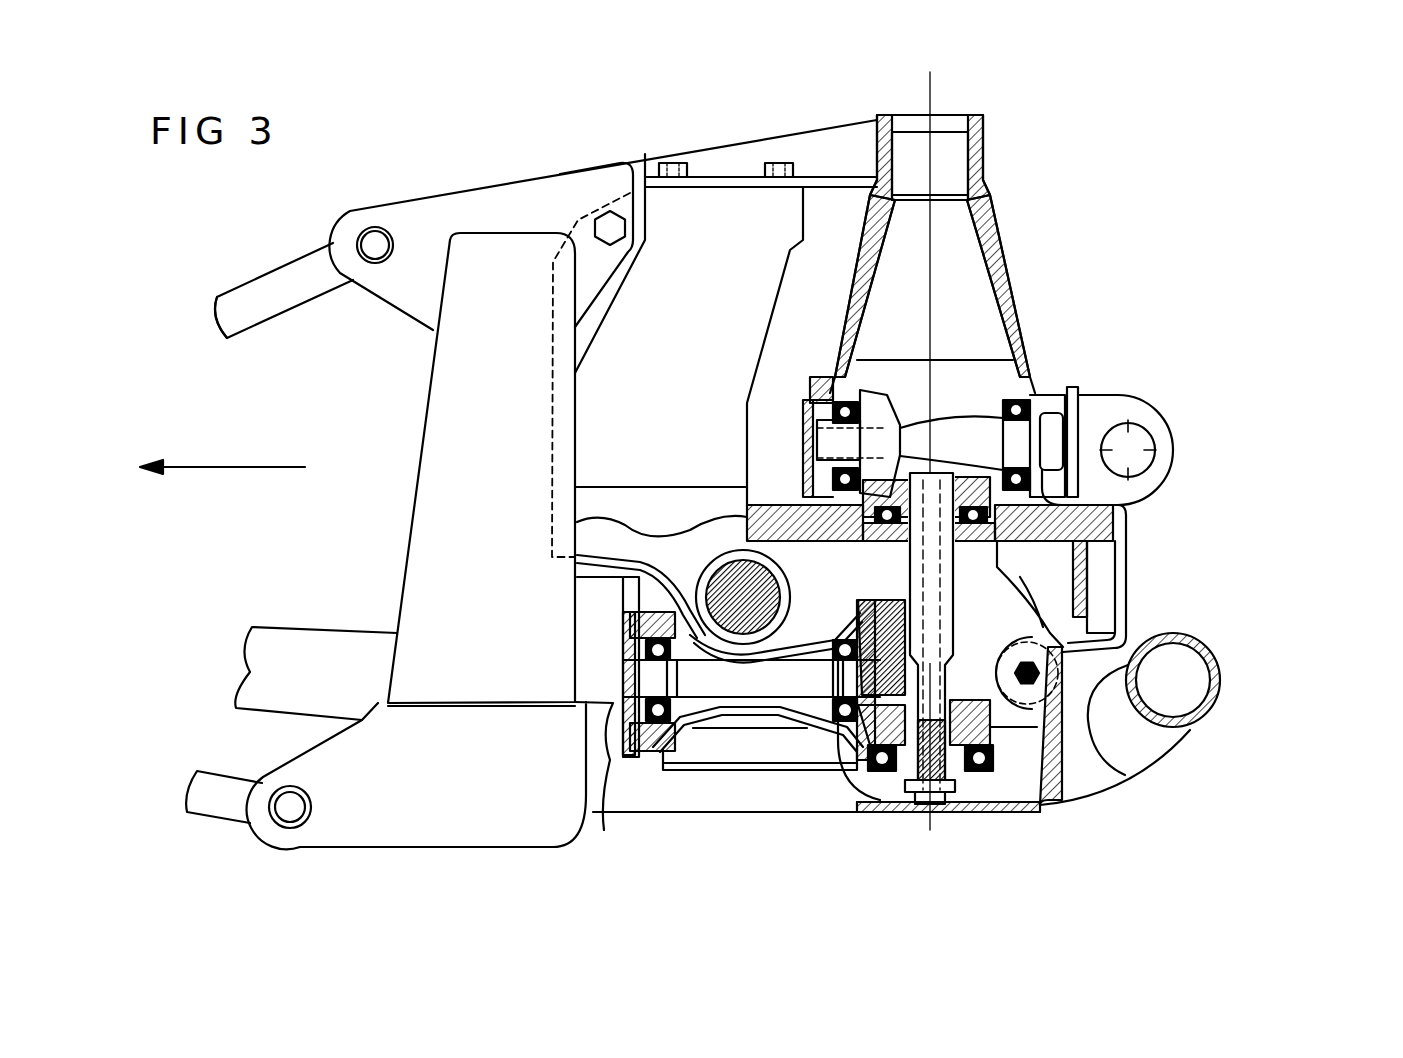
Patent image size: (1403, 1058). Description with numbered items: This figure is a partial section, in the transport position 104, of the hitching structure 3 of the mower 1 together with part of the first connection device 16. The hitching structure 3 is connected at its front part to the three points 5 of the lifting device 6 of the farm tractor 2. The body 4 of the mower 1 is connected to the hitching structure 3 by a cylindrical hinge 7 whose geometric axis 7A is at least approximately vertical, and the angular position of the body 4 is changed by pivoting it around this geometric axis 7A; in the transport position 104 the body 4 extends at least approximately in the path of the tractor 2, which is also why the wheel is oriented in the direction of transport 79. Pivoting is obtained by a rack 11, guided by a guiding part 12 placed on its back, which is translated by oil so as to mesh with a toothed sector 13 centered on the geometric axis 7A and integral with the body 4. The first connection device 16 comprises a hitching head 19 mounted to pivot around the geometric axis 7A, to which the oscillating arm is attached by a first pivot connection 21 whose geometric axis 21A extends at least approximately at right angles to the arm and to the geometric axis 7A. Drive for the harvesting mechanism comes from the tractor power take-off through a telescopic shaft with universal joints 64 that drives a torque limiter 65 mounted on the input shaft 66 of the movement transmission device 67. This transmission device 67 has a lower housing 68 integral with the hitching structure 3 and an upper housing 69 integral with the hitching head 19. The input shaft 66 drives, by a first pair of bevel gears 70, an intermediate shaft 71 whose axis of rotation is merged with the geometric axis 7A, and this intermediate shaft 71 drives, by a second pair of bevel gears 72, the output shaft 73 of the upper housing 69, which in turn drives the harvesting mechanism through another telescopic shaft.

The mower 1 is at (1180, 175).
The farm tractor 2 is at (226, 288).
The hitching structure 3 is at (522, 182).
The body 4 is at (1120, 388).
The transport position 104 is at (1186, 376).
The three points 5 is at (272, 270).
The lifting device 6 is at (320, 258).
The cylindrical hinge 7 is at (997, 590).
The geometric axis 7A is at (945, 92).
The rack 11 is at (785, 682).
The guiding part 12 is at (725, 612).
The toothed sector 13 is at (1090, 572).
The first connection device 16 is at (1020, 280).
The hitching head 19 is at (1002, 245).
The first pivot connection 21 is at (1138, 443).
The geometric axis 21A is at (1142, 447).
The telescopic shaft with universal joints 64 is at (310, 640).
The torque limiter 65 is at (617, 770).
The input shaft 66 is at (747, 632).
The movement transmission device 67 is at (1054, 810).
The lower housing 68 is at (990, 817).
The upper housing 69 is at (992, 200).
The first pair of bevel gears 70 is at (893, 812).
The intermediate shaft 71 is at (960, 698).
The second pair of bevel gears 72 is at (897, 462).
The output shaft 73 is at (1080, 390).
The direction of transport 79 is at (205, 466).